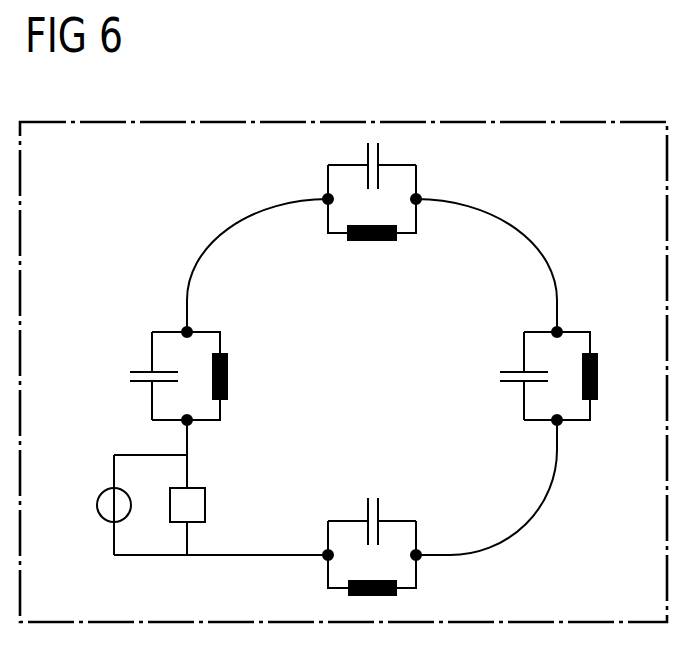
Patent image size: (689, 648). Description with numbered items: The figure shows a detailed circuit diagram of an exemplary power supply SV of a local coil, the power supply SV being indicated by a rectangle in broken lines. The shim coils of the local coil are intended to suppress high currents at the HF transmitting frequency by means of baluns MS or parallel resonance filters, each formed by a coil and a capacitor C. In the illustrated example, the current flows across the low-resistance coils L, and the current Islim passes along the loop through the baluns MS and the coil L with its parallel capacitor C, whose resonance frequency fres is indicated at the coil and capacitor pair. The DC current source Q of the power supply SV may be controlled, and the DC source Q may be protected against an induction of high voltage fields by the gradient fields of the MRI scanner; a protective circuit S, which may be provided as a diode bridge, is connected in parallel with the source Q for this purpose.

The power supply SV is at (284, 122).
The balun MS is at (146, 292).
The capacitor C is at (500, 377).
The low-resistance coil L is at (597, 375).
The DC current source Q is at (96, 505).
The protective circuit S is at (205, 505).
The limited current Islim is at (416, 199).
The resonance frequency equal to Larmor frequency fres is at (536, 352).